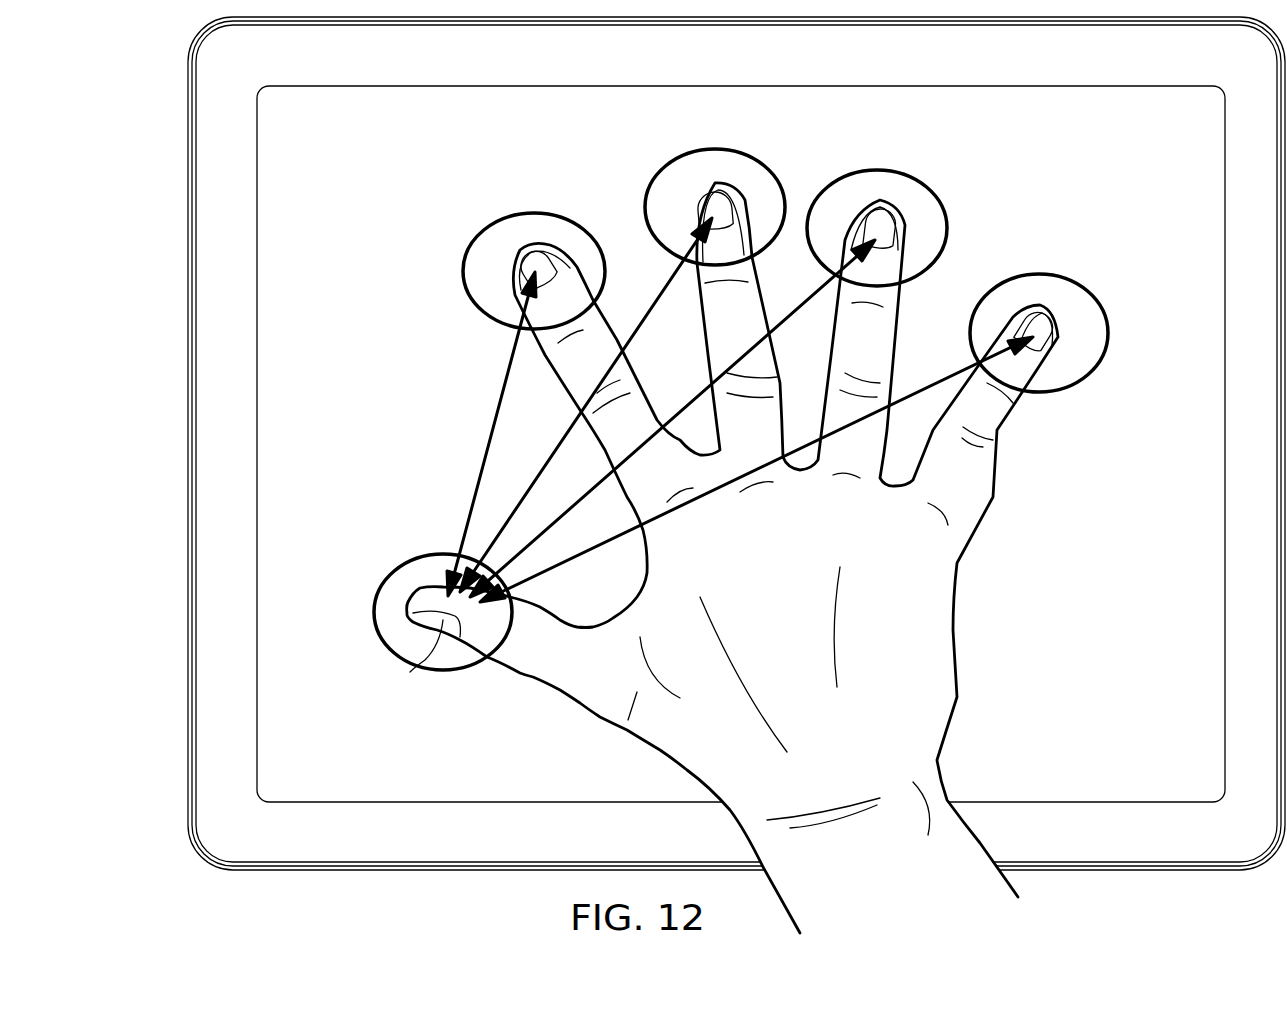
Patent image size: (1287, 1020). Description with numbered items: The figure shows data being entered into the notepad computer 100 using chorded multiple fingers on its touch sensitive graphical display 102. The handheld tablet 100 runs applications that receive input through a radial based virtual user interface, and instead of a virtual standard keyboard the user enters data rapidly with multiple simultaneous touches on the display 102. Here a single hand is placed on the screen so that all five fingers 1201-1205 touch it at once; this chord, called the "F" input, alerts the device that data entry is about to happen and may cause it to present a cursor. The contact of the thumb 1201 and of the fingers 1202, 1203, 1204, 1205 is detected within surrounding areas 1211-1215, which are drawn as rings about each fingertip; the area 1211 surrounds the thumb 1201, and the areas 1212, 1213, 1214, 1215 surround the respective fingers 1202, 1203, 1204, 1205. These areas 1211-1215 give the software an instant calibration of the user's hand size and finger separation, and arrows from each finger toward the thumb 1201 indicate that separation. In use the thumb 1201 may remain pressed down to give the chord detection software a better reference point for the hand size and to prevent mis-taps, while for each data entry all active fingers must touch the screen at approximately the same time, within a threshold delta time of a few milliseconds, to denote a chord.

The notepad computer 100 is at (188, 168).
The graphical display 102 is at (1122, 656).
The thumb 1201 is at (428, 660).
The finger 1202 is at (533, 262).
The finger 1203 is at (713, 200).
The finger 1204 is at (876, 215).
The finger 1205 is at (1040, 320).
The area 1211 is at (373, 612).
The area 1212 is at (465, 272).
The area 1213 is at (647, 210).
The area 1214 is at (945, 210).
The area 1215 is at (1108, 333).